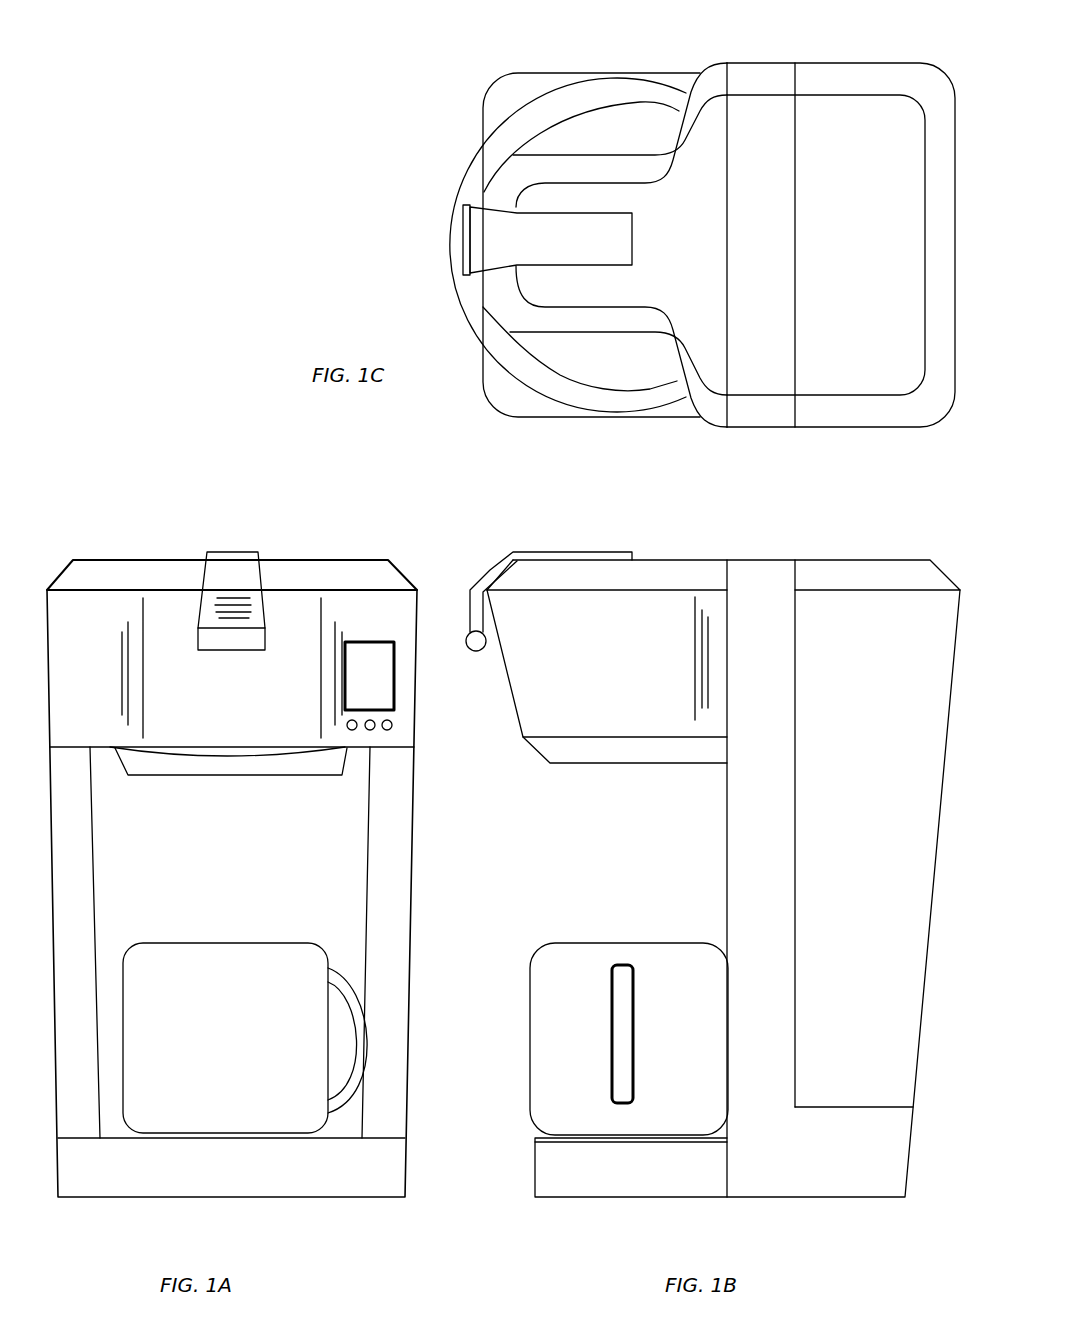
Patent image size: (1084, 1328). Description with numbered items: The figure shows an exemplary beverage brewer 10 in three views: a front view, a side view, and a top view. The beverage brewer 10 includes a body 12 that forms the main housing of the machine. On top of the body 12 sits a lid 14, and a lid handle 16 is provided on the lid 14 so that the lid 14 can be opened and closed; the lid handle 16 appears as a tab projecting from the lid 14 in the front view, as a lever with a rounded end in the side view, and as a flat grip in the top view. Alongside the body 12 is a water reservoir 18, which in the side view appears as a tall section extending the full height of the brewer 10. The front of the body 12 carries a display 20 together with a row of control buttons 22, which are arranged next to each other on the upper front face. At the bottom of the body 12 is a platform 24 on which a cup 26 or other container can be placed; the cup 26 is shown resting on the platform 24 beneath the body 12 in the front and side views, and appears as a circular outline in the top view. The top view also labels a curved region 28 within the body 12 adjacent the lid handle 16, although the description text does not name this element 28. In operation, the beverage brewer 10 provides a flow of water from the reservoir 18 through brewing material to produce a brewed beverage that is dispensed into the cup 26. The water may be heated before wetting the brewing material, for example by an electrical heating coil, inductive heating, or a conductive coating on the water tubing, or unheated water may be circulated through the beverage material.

In FIG. 1C, the beverage brewer 10 is at (408, 86).
In FIG. 1A, the beverage brewer 10 is at (131, 470).
In FIG. 1B, the beverage brewer 10 is at (498, 518).
In FIG. 1A, the body 12 is at (103, 678).
In FIG. 1B, the body 12 is at (767, 595).
In FIG. 1C, the lid 14 is at (688, 240).
In FIG. 1A, the lid 14 is at (140, 566).
In FIG. 1B, the lid 14 is at (638, 575).
In FIG. 1C, the lid handle 16 is at (531, 251).
In FIG. 1A, the lid handle 16 is at (253, 581).
In FIG. 1B, the lid handle 16 is at (492, 572).
In FIG. 1B, the water reservoir 18 is at (870, 773).
In FIG. 1A, the display 20 is at (377, 673).
In FIG. 1A, the control buttons 22 is at (377, 728).
In FIG. 1A, the platform 24 is at (390, 1138).
In FIG. 1C, the cup 26 is at (470, 192).
In FIG. 1A, the cup 26 is at (248, 1039).
In FIG. 1B, the cup 26 is at (593, 981).
In FIG. 1C, the brew chamber 28 is at (628, 138).